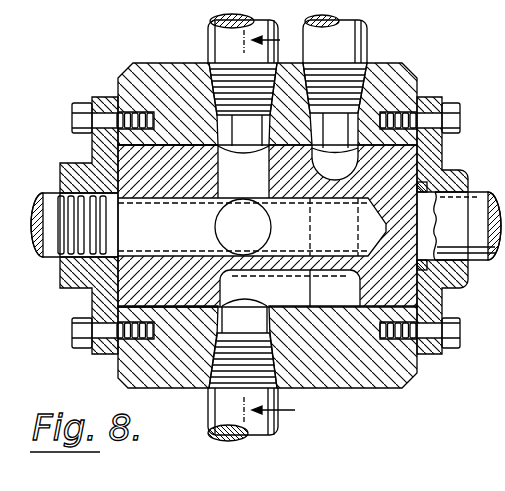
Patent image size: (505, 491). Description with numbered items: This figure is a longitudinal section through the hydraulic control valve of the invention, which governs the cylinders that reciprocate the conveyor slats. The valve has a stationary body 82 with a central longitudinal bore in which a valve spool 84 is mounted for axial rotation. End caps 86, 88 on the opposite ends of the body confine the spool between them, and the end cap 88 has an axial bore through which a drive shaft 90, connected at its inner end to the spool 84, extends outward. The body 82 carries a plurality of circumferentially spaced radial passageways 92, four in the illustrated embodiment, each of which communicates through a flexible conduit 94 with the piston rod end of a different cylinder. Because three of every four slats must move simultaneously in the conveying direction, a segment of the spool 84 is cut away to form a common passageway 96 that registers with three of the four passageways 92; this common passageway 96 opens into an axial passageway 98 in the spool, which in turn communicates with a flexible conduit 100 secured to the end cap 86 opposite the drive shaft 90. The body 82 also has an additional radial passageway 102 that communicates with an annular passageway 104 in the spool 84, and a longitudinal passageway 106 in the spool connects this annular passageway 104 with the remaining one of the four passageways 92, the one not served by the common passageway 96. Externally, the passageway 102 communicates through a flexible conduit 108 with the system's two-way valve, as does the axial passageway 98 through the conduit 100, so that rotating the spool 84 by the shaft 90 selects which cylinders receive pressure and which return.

The stationary body 82 is at (398, 385).
The valve spool 84 is at (128, 72).
The end cap 86 is at (95, 162).
The end cap 88 is at (435, 160).
The drive shaft 90 is at (475, 196).
The radial passageways 92 is at (188, 167).
The flexible conduit 94 is at (215, 43).
The common passageway 96 is at (242, 176).
The axial passageway 98 is at (157, 228).
The flexible conduit 100 is at (39, 258).
The radial passageway 102 is at (342, 137).
The annular passageway 104 is at (347, 288).
The longitudinal passageway 106 is at (288, 302).
The flexible conduit 108 is at (360, 37).